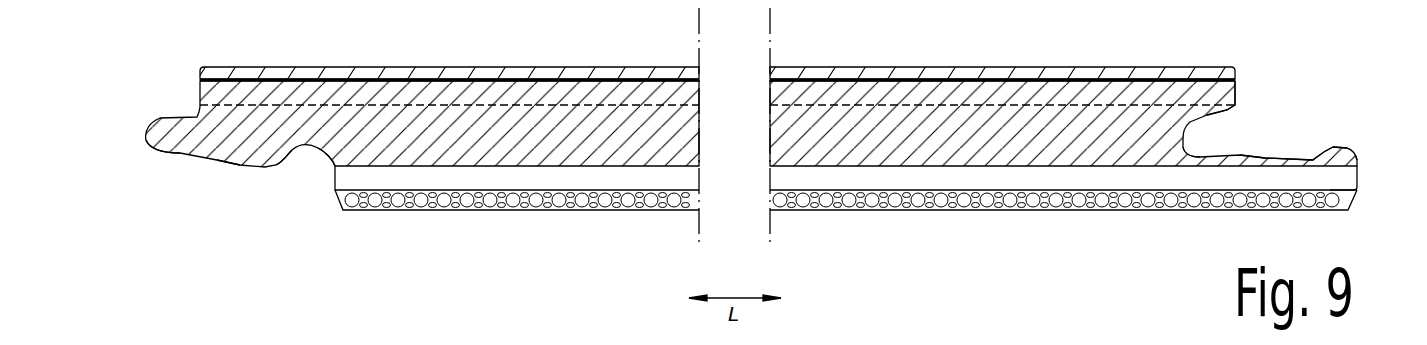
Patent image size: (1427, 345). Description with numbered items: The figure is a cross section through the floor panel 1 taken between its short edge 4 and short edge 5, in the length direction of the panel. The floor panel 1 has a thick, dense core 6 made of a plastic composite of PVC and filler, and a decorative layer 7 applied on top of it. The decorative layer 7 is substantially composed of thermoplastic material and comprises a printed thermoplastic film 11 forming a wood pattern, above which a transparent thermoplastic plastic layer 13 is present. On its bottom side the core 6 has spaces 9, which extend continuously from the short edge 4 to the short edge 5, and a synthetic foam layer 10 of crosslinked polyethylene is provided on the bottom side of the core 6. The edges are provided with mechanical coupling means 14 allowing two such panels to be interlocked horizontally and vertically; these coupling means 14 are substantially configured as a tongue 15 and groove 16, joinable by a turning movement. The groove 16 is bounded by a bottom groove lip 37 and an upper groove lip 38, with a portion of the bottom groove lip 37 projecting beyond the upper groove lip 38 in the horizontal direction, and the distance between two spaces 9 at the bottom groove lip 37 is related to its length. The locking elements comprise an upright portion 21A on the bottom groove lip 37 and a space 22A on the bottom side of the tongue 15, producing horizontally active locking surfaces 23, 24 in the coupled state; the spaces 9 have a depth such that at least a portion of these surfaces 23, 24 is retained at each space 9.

The floor panel 1 is at (777, 154).
The short edge 4 is at (1310, 93).
The short edge 5 is at (209, 222).
The core 6 is at (751, 134).
The decorative layer 7 is at (180, 85).
The spaces 9 is at (473, 177).
The synthetic foam layer 10 is at (935, 200).
The printed thermoplastic film 11 is at (627, 77).
The transparent thermoplastic plastic layer 13 is at (892, 72).
The mechanical coupling means 14 is at (253, 240).
The tongue 15 is at (223, 140).
The groove 16 is at (1187, 133).
The upright portion 21A is at (1332, 153).
The space 22A is at (317, 167).
The horizontally active locking surface 23 is at (283, 160).
The horizontally active locking surface 24 is at (1317, 155).
The bottom groove lip 37 is at (1242, 172).
The upper groove lip 38 is at (1203, 88).